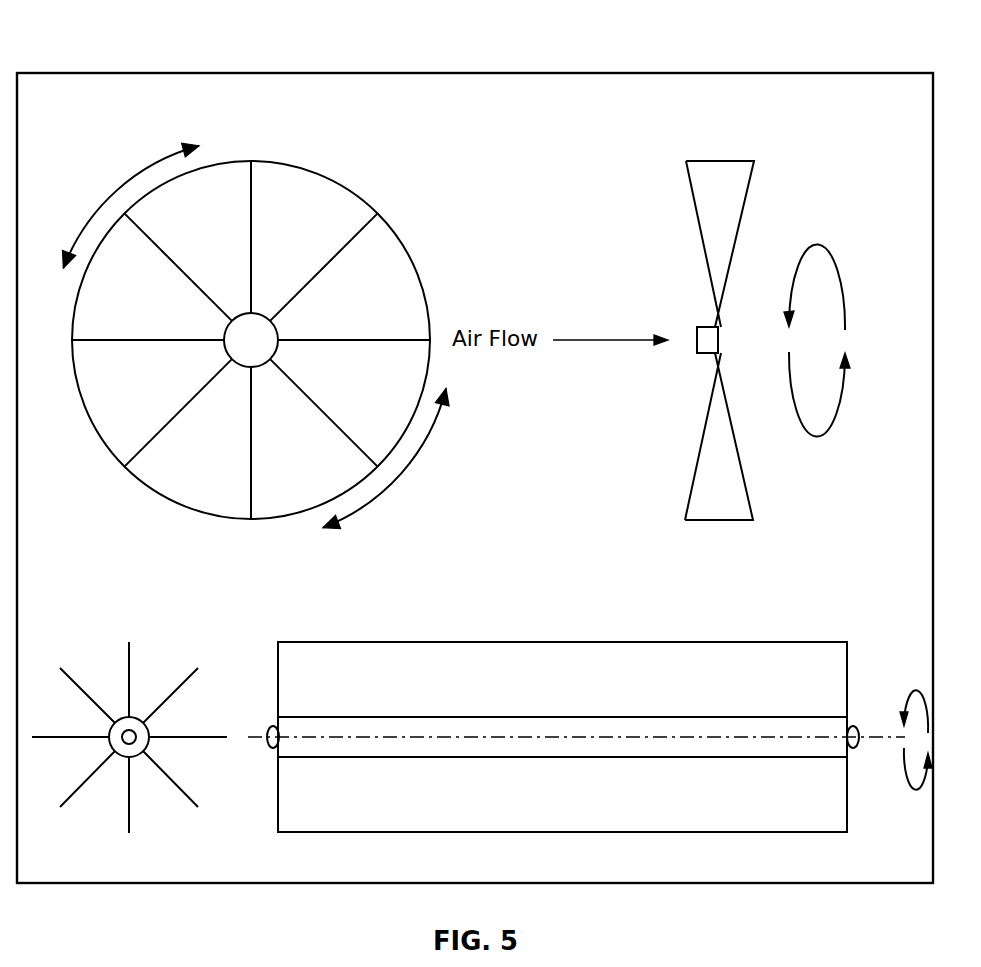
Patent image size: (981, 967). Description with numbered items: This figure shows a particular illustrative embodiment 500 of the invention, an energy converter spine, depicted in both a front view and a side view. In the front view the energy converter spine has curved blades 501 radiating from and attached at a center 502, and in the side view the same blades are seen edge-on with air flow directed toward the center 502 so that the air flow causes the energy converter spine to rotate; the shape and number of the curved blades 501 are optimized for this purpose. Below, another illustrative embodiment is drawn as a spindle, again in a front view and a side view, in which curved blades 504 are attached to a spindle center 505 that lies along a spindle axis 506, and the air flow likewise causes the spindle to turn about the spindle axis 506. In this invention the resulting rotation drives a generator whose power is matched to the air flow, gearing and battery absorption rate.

The energy converter spine embodiment 500 is at (131, 58).
The curved blades 501 is at (398, 232).
The center 502 is at (256, 338).
The curved blades 504 is at (198, 737).
The spindle center 505 is at (128, 733).
The spindle axis 506 is at (875, 737).